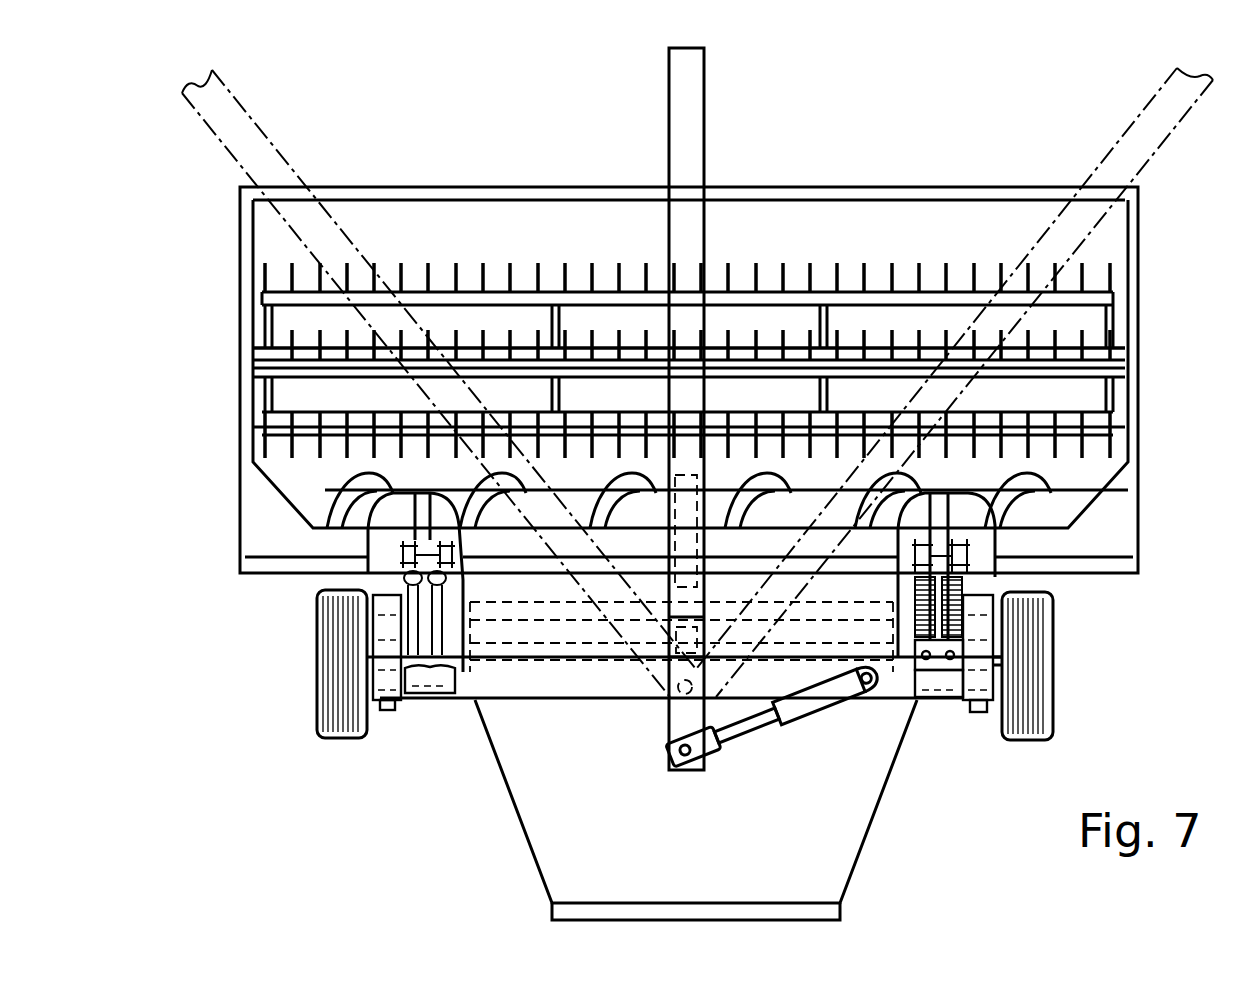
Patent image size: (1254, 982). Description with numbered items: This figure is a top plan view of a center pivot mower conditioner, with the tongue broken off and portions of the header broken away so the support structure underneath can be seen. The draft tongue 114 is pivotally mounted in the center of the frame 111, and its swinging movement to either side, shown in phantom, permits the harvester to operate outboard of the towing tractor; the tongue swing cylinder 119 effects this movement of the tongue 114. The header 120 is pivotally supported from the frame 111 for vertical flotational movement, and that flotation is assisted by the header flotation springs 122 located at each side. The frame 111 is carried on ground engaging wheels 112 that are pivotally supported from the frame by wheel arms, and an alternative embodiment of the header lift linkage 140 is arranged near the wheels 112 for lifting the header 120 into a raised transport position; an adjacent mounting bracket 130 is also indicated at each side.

The frame 111 is at (930, 745).
The ground engaging wheels 112 is at (333, 703).
The draft tongue 114 is at (281, 138).
The tongue swing cylinder 119 is at (746, 728).
The header 120 is at (1140, 348).
The header flotation springs 122 is at (407, 573).
The mounting bracket 130 is at (403, 720).
The header lift linkage 140 is at (436, 717).